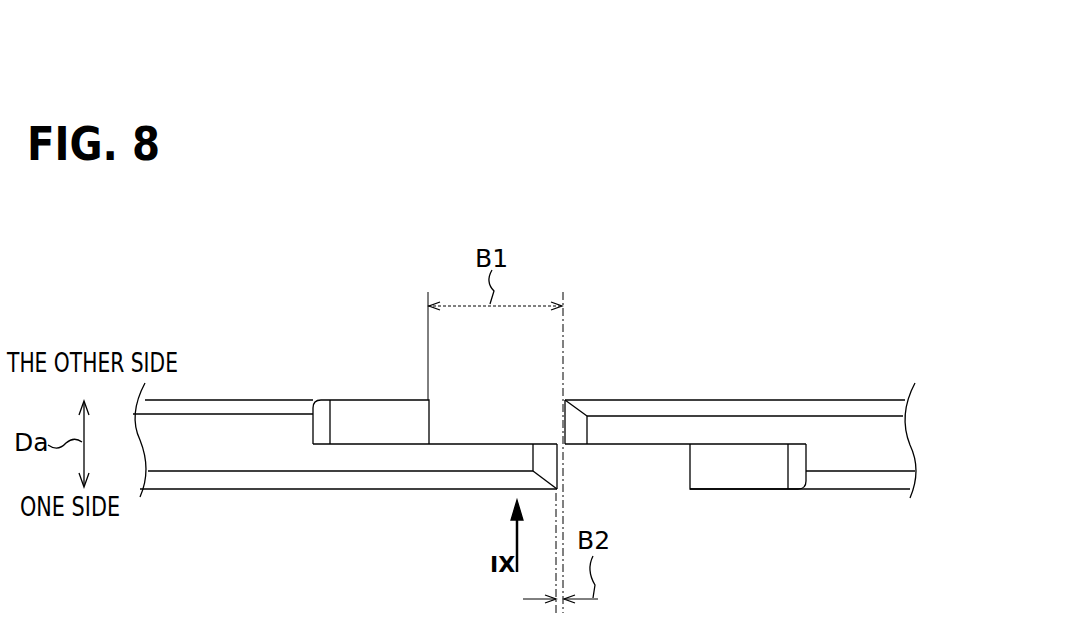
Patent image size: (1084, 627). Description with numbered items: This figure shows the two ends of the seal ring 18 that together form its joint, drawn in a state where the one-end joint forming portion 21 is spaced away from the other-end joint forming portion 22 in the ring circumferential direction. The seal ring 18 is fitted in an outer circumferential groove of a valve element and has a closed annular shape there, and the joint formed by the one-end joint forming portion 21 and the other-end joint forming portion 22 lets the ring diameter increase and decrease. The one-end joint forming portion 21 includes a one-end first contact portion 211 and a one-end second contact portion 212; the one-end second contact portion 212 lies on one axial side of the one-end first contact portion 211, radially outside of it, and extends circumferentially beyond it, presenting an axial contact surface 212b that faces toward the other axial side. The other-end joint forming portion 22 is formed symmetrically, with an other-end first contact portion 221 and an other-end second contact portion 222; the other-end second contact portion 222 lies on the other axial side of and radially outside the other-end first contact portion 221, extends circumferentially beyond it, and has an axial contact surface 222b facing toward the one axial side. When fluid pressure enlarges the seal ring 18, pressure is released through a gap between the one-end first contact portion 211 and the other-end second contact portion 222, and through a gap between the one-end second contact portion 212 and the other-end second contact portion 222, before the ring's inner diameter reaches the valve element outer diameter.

The seal ring 18 is at (787, 353).
The one-end joint forming portion 21 is at (438, 494).
The one-end first contact portion 211 is at (387, 428).
The one-end second contact portion 212 is at (488, 459).
The axial contact surface 212b is at (508, 443).
The other-end joint forming portion 22 is at (662, 397).
The other-end first contact portion 221 is at (760, 478).
The other-end second contact portion 222 is at (608, 428).
The axial contact surface 222b is at (650, 445).